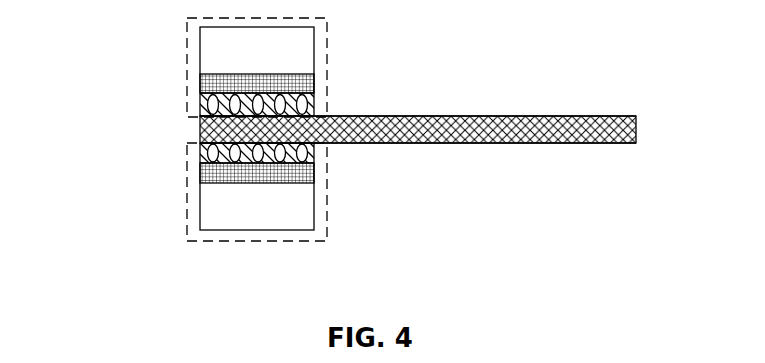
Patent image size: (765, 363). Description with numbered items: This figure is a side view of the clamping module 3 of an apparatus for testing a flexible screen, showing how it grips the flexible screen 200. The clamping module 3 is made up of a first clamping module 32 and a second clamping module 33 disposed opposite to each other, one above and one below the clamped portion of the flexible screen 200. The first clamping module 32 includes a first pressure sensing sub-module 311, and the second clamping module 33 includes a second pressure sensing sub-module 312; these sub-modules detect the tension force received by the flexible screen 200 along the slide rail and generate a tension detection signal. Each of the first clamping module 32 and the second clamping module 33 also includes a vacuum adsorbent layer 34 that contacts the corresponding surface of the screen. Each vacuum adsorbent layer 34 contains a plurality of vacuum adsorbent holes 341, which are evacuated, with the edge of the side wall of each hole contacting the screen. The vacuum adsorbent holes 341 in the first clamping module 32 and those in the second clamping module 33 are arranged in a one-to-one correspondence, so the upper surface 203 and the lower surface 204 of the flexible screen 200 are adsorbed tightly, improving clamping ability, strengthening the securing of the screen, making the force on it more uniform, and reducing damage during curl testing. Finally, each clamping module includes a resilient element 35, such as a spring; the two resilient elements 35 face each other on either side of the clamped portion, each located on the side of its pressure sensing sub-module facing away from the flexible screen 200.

The clamping module 3 is at (236, 155).
The first clamping module 32 is at (187, 72).
The second clamping module 33 is at (187, 200).
The vacuum adsorbent layer 34 is at (284, 190).
The resilient element 35 is at (300, 46).
The first pressure sensing sub-module 311 is at (303, 81).
The second pressure sensing sub-module 312 is at (302, 170).
The vacuum adsorbent hole 341 is at (272, 162).
The flexible screen 200 is at (583, 115).
The upper surface 203 is at (452, 115).
The lower surface 204 is at (458, 143).